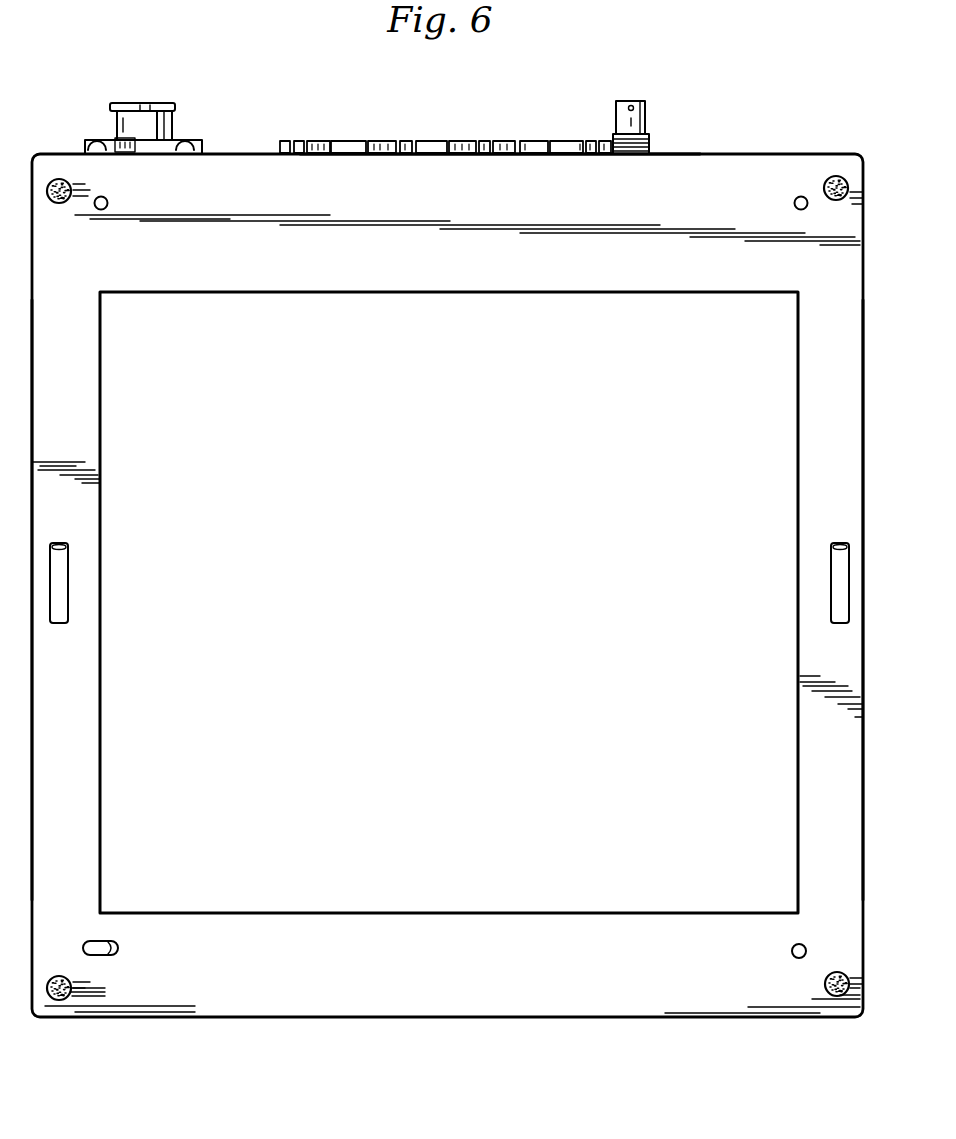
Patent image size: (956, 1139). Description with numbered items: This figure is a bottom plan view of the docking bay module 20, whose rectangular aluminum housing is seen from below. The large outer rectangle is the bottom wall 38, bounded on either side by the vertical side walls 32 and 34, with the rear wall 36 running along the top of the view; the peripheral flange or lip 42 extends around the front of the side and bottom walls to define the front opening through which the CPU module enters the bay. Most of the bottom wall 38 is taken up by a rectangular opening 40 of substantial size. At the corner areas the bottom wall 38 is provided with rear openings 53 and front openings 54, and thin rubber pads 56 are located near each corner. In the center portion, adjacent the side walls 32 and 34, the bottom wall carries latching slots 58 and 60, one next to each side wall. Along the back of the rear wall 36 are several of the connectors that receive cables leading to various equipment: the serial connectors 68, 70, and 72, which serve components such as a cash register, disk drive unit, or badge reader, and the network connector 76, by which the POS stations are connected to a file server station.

The docking bay module 20 is at (764, 102).
The vertical side wall 32 is at (32, 380).
The vertical side wall 34 is at (863, 378).
The rear wall 36 is at (736, 152).
The bottom wall 38 is at (427, 266).
The rectangular opening 40 is at (182, 296).
The peripheral flange or lip 42 is at (173, 103).
The rear openings 53 is at (106, 199).
The front openings 54 is at (118, 949).
The thin rubber pads 56 is at (60, 205).
The latching slot 58 is at (64, 546).
The latching slot 60 is at (838, 546).
The serial connector 68 is at (551, 140).
The serial connector 70 is at (456, 140).
The serial connector 72 is at (346, 140).
The network connector 76 is at (645, 116).